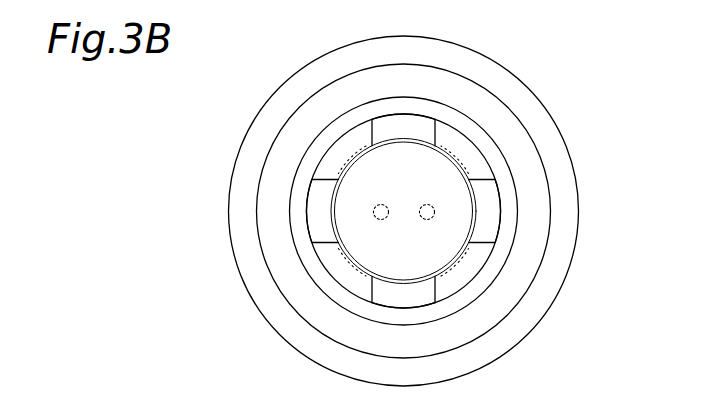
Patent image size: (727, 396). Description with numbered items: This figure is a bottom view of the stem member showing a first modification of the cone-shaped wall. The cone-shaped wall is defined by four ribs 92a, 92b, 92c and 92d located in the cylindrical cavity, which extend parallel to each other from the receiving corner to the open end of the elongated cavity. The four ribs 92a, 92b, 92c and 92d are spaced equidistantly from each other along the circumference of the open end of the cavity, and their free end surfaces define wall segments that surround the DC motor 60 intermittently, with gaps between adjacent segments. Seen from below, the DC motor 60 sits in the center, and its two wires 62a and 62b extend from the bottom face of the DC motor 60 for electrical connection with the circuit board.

The DC motor 60 is at (450, 154).
The wire 62a is at (375, 203).
The wire 62b is at (433, 203).
The rib 92a is at (317, 216).
The rib 92b is at (422, 295).
The rib 92c is at (492, 218).
The rib 92d is at (419, 125).